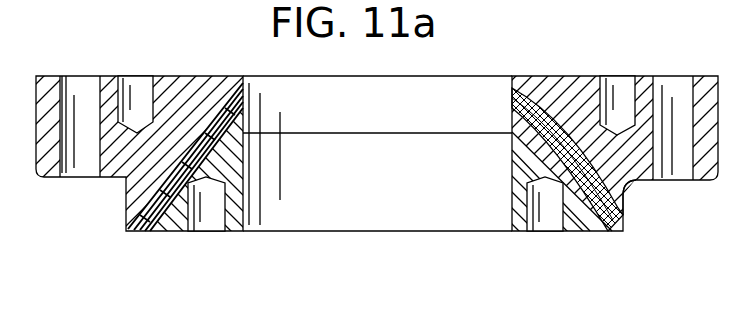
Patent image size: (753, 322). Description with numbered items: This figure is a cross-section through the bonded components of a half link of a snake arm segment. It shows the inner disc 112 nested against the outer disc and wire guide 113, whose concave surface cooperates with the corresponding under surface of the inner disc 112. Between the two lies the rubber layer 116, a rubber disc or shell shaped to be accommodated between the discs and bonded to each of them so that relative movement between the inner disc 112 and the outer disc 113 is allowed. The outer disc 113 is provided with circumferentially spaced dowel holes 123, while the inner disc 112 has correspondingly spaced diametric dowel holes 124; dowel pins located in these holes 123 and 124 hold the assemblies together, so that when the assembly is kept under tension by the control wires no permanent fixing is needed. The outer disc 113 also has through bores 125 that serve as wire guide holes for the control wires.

The inner disc 112 is at (157, 218).
The outer disc and wire guide 113 is at (557, 83).
The rubber layer 116 is at (624, 203).
The dowel holes 123 is at (144, 92).
The diametric dowel holes 124 is at (206, 234).
The through bores 125 is at (672, 98).